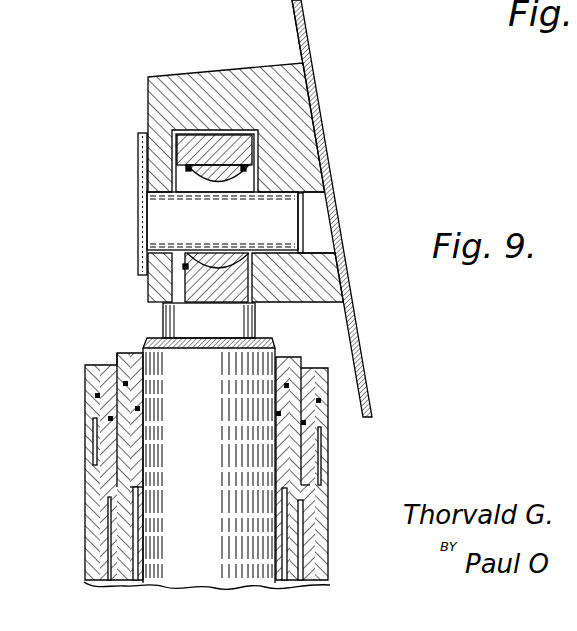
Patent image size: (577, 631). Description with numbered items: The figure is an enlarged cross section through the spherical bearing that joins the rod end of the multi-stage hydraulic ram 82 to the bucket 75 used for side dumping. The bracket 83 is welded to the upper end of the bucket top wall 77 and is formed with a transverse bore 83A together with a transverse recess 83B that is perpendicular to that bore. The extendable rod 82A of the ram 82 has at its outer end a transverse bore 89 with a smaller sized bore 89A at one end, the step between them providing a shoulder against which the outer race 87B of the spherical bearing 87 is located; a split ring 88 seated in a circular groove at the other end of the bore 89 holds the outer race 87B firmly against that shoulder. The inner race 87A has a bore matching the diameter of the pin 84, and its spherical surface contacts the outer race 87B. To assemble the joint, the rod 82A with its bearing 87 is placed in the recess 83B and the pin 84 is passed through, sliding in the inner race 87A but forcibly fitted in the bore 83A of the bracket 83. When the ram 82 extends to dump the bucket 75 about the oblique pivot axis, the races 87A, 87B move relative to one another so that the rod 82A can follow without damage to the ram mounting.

The bucket 75 is at (321, 107).
The bucket top wall 77 is at (306, 30).
The multi-stage hydraulic ram 82 is at (84, 463).
The rod end 82A is at (253, 457).
The bracket 83 is at (173, 77).
The transverse bore 83A is at (334, 197).
The transverse recess 83B is at (225, 129).
The pin 84 is at (138, 220).
The spherical bearing 87 is at (182, 269).
The inner race 87A is at (226, 252).
The outer race 87B is at (223, 189).
The split ring 88 is at (190, 165).
The transverse bore 89 is at (188, 168).
The smaller sized bore 89A is at (252, 165).